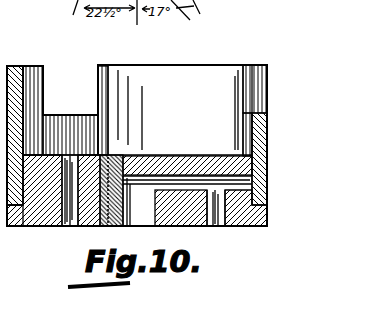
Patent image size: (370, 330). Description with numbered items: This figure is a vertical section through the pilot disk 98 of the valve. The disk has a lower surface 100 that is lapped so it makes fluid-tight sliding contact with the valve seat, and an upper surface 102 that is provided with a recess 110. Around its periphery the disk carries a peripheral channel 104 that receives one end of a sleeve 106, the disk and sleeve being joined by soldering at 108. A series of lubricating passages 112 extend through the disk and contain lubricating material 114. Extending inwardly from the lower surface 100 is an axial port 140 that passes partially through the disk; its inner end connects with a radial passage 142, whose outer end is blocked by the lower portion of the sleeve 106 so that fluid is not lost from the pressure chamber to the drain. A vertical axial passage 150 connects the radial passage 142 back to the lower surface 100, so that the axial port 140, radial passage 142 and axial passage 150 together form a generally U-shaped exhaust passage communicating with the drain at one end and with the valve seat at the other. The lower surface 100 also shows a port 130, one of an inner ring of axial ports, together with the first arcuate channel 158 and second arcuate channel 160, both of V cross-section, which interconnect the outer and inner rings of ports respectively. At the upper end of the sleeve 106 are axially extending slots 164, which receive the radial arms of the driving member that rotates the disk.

The pilot disk 98 is at (184, 157).
The lower surface 100 is at (250, 228).
The upper surface 102 is at (41, 156).
The peripheral channel 104 is at (22, 160).
The sleeve 106 is at (270, 130).
The soldered joint 108 is at (249, 157).
The recess 110 is at (120, 157).
The lubricating passages 112 is at (108, 227).
The lubricating material 114 is at (103, 156).
The port 130 is at (68, 185).
The axial port 140 is at (155, 206).
The radial passage 142 is at (251, 180).
The axial passage 150 is at (216, 228).
The first arcuate channel 158 is at (48, 227).
The second arcuate channel 160 is at (76, 227).
The axially extending slots 164 is at (100, 78).